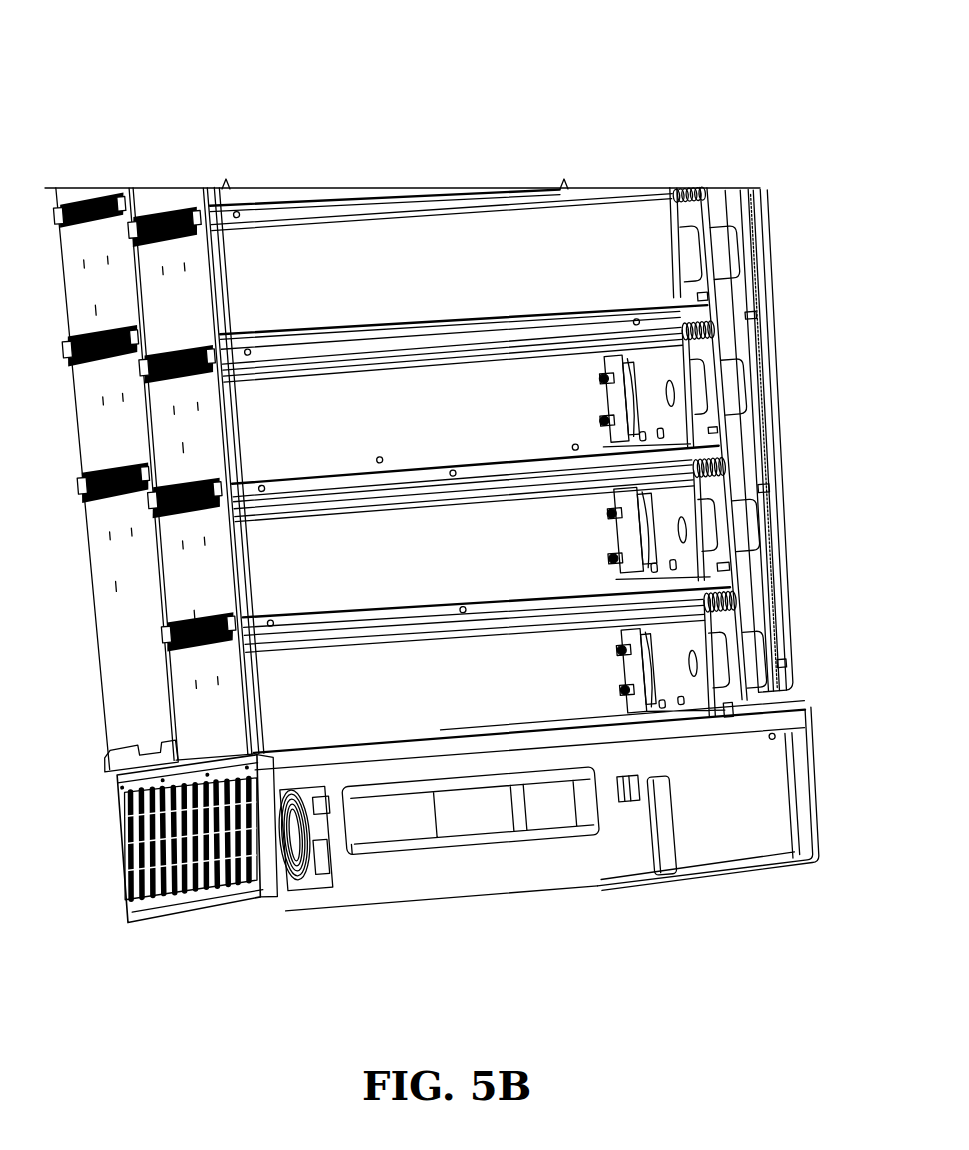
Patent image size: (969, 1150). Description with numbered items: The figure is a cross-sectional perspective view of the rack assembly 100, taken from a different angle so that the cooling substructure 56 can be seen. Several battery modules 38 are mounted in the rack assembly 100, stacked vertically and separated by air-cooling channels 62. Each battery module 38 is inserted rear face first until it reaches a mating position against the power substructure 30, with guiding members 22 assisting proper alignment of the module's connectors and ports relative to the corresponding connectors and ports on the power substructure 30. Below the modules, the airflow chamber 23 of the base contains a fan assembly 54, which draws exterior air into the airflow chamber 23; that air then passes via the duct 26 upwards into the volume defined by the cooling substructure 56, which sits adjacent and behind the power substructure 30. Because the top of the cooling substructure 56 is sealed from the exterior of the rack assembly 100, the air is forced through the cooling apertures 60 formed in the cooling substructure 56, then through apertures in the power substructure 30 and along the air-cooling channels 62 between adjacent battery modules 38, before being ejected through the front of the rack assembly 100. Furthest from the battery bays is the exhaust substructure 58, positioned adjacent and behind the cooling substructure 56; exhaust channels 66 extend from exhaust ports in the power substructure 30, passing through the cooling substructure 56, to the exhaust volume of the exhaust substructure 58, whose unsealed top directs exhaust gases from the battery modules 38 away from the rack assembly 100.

The rack assembly 100 is at (85, 60).
The guiding members 22 is at (622, 674).
The airflow chamber 23 is at (440, 876).
The duct 26 is at (137, 836).
The power substructure 30 is at (697, 217).
The battery modules 38 is at (178, 683).
The fan assembly 54 is at (307, 876).
The cooling substructure 56 is at (765, 580).
The exhaust substructure 58 is at (760, 284).
The cooling apertures 60 is at (700, 339).
The air-cooling channels 62 is at (504, 465).
The exhaust channels 66 is at (756, 672).